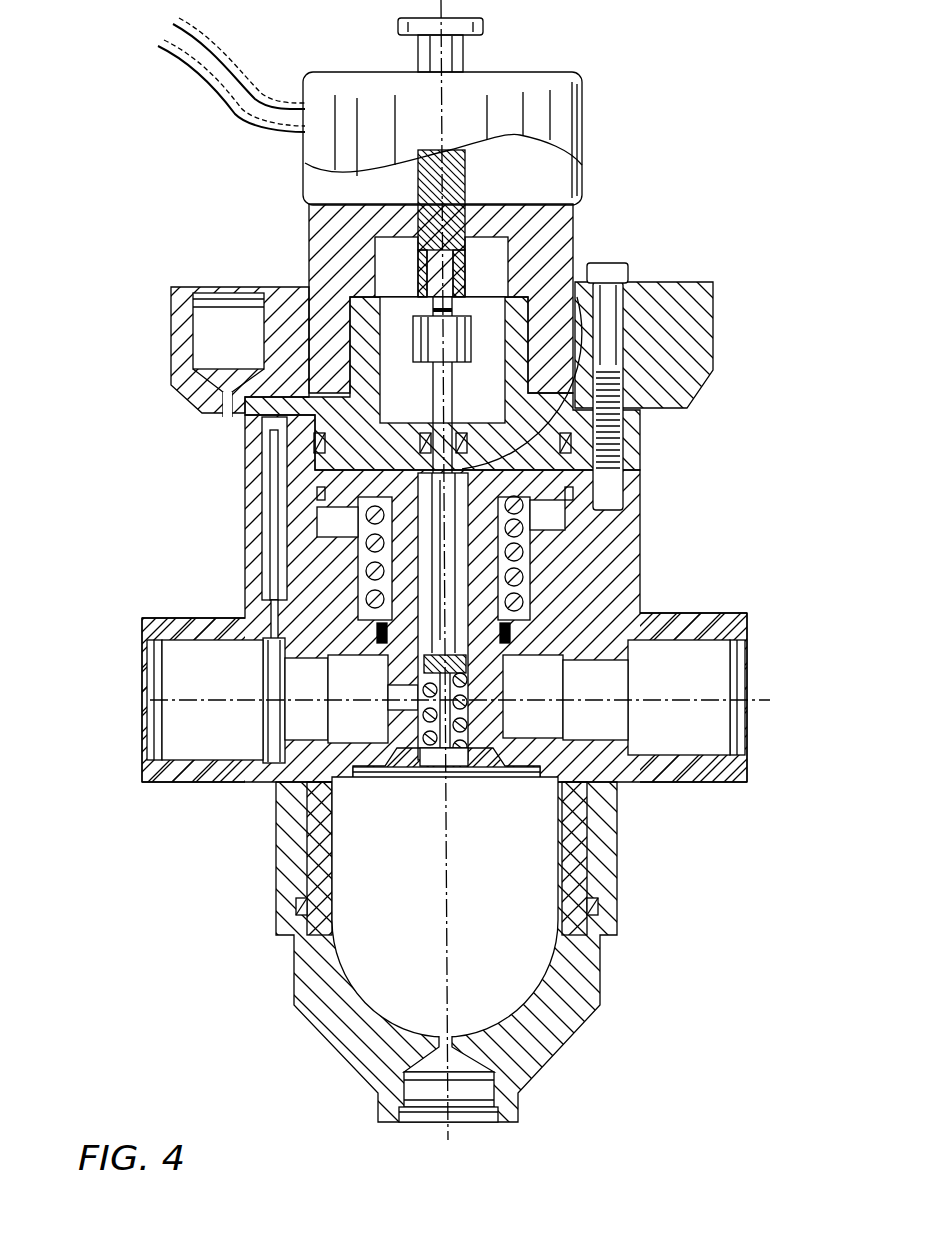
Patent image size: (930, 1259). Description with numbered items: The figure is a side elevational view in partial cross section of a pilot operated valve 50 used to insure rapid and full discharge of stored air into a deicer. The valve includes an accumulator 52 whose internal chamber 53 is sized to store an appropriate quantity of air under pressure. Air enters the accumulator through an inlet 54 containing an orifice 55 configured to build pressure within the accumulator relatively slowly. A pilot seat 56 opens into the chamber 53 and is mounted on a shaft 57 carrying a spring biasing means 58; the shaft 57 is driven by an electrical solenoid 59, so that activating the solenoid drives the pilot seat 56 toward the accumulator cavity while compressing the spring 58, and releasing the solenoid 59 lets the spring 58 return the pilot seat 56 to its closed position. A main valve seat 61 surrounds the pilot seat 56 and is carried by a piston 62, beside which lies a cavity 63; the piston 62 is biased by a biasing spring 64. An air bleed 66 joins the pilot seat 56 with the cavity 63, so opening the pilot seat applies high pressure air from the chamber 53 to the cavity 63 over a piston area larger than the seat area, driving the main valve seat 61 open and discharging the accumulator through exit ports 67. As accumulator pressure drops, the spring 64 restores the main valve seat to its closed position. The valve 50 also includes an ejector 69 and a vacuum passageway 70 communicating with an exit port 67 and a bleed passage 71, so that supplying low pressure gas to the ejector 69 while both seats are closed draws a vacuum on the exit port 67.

The pilot operated valve 50 is at (632, 126).
The accumulator 52 is at (333, 1017).
The internal chamber 53 is at (507, 933).
The inlet 54 is at (447, 1088).
The orifice 55 is at (463, 1045).
The pilot seat 56 is at (453, 776).
The shaft 57 is at (450, 583).
The spring biasing means 58 is at (425, 728).
The electrical solenoid 59 is at (562, 185).
The main valve seat 61 is at (350, 765).
The piston 62 is at (313, 517).
The cavity 63 is at (610, 332).
The biasing spring 64 is at (527, 521).
The air bleed 66 is at (567, 688).
The exit ports 67 is at (202, 668).
The ejector 69 is at (234, 333).
The vacuum passageway 70 is at (273, 575).
The bleed passage 71 is at (248, 420).